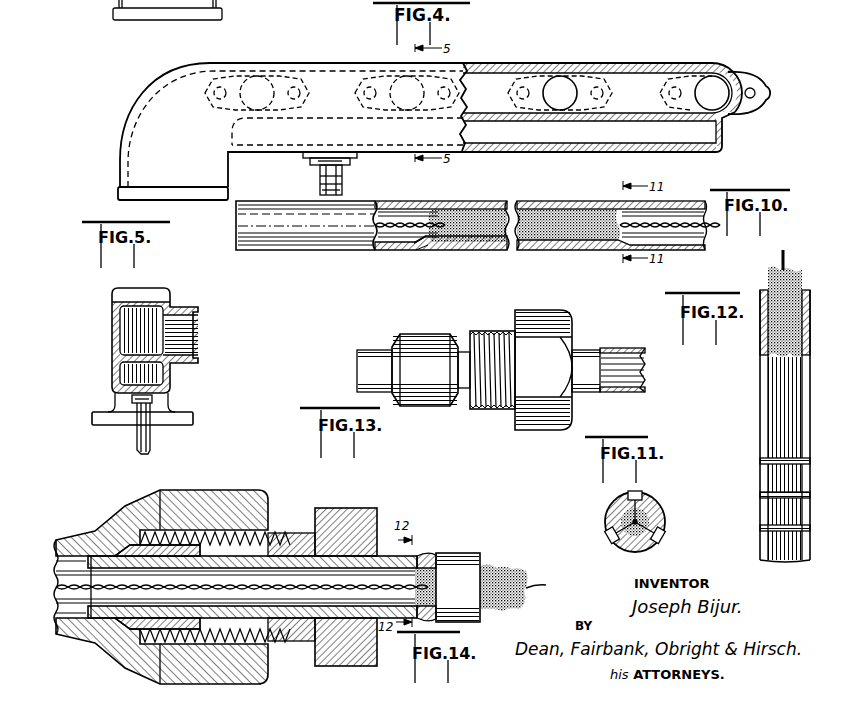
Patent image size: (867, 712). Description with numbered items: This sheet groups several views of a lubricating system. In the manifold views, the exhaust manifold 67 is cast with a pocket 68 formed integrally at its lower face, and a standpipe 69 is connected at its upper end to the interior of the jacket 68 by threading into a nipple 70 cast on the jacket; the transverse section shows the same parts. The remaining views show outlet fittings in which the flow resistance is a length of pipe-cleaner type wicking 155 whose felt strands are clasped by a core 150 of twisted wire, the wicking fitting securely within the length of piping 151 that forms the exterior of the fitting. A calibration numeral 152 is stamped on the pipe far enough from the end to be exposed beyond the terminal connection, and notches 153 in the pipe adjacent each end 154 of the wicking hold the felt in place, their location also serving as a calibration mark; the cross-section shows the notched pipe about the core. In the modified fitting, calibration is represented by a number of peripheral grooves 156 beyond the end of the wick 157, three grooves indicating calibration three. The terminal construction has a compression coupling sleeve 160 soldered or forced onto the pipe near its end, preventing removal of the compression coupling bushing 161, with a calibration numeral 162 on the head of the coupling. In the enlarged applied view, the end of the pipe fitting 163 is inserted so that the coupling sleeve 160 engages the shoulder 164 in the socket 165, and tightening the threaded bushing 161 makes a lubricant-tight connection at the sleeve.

In FIG. 4, the exhaust manifold 67 is at (552, 64).
In FIG. 5, the exhaust manifold 67 is at (150, 290).
In FIG. 4, the pocket 68 is at (626, 154).
In FIG. 5, the pocket 68 is at (170, 378).
In FIG. 4, the standpipe 69 is at (342, 179).
In FIG. 5, the standpipe 69 is at (150, 438).
In FIG. 4, the nipple 70 is at (306, 161).
In FIG. 5, the nipple 70 is at (160, 399).
In FIG. 10, the core of twisted wire 150 is at (625, 211).
In FIG. 11, the core of twisted wire 150 is at (662, 520).
In FIG. 10, the length of piping 151 is at (500, 201).
In FIG. 11, the length of piping 151 is at (609, 515).
In FIG. 10, the numeral 152 is at (320, 238).
In FIG. 10, the notches 153 is at (428, 248).
In FIG. 11, the notches 153 is at (612, 543).
In FIG. 10, the end of the wicking 154 is at (438, 208).
In FIG. 11, the end of the wicking 154 is at (655, 547).
In FIG. 10, the wicking 155 is at (562, 244).
In FIG. 12, the peripheral grooves 156 is at (762, 526).
In FIG. 12, the wick 157 is at (805, 328).
In FIG. 13, the compression coupling sleeve 160 is at (421, 340).
In FIG. 14, the compression coupling sleeve 160 is at (158, 628).
In FIG. 13, the compression coupling bushing 161 is at (491, 332).
In FIG. 14, the compression coupling bushing 161 is at (299, 532).
In FIG. 13, the numeral 162 is at (562, 357).
In FIG. 13, the pipe fitting 163 is at (623, 389).
In FIG. 14, the pipe fitting 163 is at (463, 556).
In FIG. 14, the shoulder 164 is at (113, 639).
In FIG. 14, the socket 165 is at (107, 548).